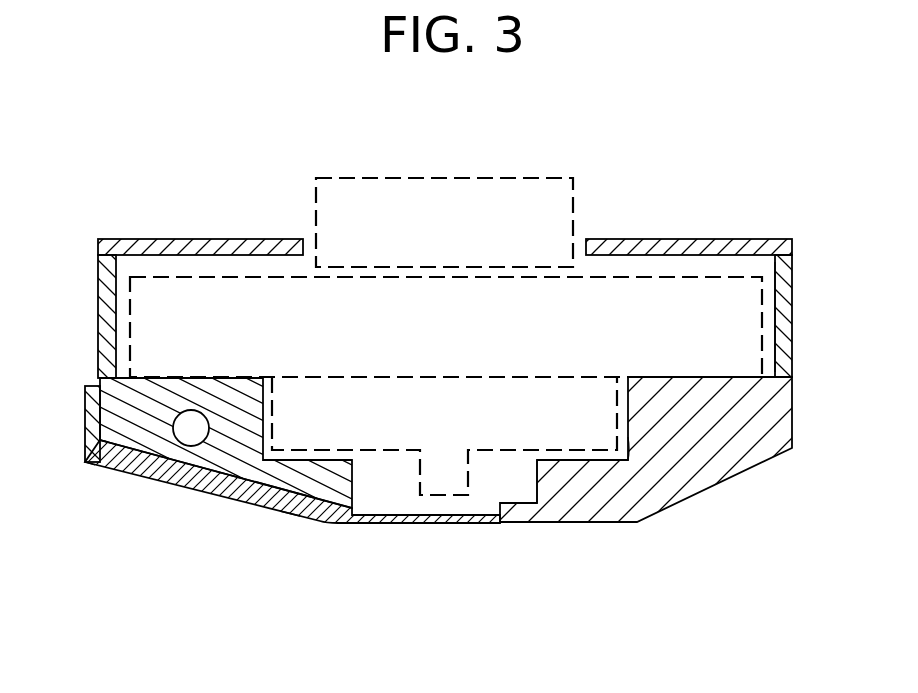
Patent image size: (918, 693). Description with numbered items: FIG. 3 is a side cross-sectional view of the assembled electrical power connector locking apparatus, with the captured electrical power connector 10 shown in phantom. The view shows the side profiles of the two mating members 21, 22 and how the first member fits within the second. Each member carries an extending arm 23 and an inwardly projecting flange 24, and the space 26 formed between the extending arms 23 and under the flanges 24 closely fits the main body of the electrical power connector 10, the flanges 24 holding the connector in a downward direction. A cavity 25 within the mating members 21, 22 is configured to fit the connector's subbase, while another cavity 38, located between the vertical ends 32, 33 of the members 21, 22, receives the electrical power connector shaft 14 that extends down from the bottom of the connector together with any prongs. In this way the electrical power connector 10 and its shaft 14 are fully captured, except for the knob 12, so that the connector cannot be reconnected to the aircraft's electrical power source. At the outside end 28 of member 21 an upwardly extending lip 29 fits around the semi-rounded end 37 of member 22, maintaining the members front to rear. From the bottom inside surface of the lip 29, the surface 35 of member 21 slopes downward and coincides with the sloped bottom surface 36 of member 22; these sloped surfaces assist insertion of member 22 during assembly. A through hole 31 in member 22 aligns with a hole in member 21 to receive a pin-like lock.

The electrical power connector 10 is at (729, 289).
The knob 12 is at (538, 178).
The shaft 14 is at (480, 473).
The member 21 is at (723, 467).
The member 22 is at (144, 452).
The extending arm 23 is at (782, 297).
The flange 24 is at (728, 239).
The cavity 25 is at (628, 437).
The space 26 is at (770, 340).
The outside end 28 is at (123, 467).
The lip 29 is at (85, 422).
The through hole 31 is at (194, 452).
The vertical end 32 is at (540, 477).
The vertical end 33 is at (358, 515).
The surface 35 is at (295, 503).
The sloped bottom surface 36 is at (93, 462).
The semi-rounded end 37 is at (100, 440).
The cavity 38 is at (400, 492).